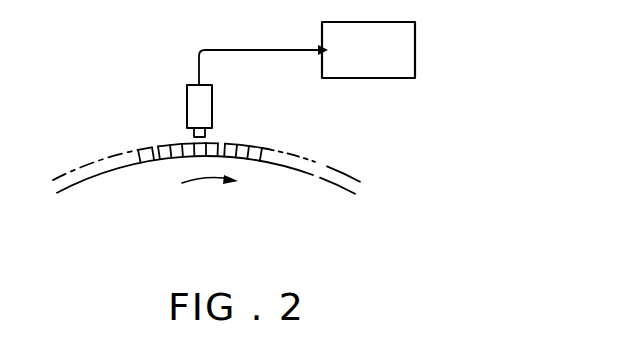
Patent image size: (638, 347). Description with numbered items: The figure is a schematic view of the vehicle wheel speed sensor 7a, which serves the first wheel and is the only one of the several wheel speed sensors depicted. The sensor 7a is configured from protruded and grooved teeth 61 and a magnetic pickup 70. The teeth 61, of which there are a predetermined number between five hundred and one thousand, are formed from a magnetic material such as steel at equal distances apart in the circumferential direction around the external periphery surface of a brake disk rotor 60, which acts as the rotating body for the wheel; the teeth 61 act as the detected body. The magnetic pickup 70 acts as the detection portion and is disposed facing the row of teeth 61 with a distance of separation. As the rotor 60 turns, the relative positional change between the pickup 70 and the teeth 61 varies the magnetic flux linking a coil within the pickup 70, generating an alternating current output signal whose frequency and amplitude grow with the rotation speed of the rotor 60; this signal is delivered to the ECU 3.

The ECU (electronic control unit) 3 is at (415, 58).
The vehicle wheel speed sensor 7a is at (152, 71).
The magnetic pickup 70 is at (193, 134).
The brake disk rotor 60 is at (313, 193).
The teeth 61 is at (257, 147).